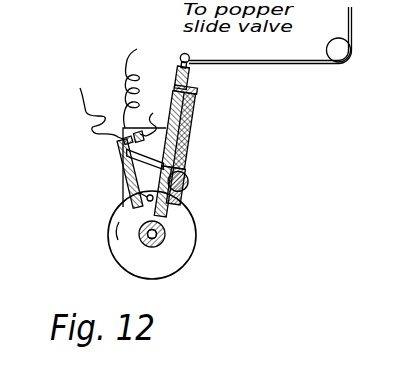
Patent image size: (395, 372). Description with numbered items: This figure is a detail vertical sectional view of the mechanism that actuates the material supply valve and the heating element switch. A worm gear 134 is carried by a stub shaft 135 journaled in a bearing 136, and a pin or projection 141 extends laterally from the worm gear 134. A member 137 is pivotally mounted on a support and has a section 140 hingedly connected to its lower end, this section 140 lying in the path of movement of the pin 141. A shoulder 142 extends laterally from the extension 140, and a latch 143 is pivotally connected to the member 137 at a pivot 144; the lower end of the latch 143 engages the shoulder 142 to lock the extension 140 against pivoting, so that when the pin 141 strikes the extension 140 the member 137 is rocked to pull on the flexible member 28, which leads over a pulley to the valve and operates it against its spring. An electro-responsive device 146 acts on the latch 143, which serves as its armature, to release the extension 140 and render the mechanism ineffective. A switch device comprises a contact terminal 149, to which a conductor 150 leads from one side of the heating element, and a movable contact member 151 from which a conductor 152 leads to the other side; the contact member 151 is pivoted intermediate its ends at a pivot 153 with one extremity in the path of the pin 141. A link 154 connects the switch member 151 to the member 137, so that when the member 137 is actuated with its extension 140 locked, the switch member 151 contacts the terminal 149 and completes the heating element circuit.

The flexible member 28 is at (311, 64).
The member 137 is at (173, 77).
The pivot 144 is at (199, 89).
The latch 143 is at (196, 120).
The shoulder 142 is at (183, 199).
The electro-responsive device 146 is at (189, 173).
The pin or projection 141 is at (135, 189).
The link 154 is at (145, 153).
The pivot 153 is at (123, 158).
The movable contact member 151 is at (118, 146).
The conductor 150 is at (137, 49).
The conductor 152 is at (80, 88).
The contact terminal 149 is at (153, 113).
The worm gear 134 is at (191, 256).
The section 140 is at (145, 207).
The stub shaft 135 is at (144, 238).
The bearing 136 is at (160, 234).